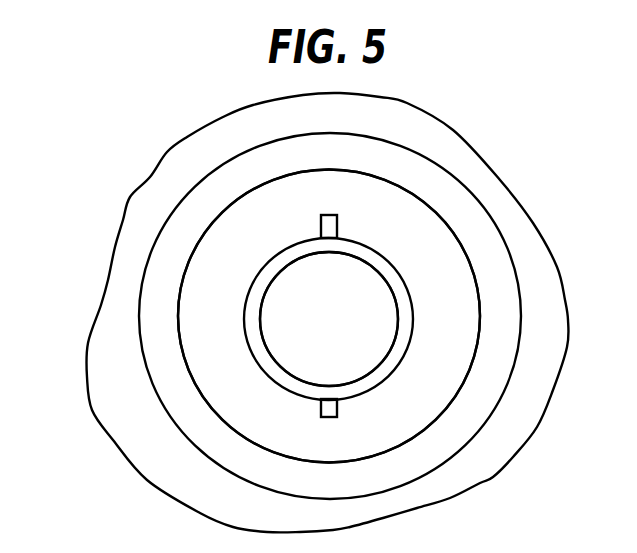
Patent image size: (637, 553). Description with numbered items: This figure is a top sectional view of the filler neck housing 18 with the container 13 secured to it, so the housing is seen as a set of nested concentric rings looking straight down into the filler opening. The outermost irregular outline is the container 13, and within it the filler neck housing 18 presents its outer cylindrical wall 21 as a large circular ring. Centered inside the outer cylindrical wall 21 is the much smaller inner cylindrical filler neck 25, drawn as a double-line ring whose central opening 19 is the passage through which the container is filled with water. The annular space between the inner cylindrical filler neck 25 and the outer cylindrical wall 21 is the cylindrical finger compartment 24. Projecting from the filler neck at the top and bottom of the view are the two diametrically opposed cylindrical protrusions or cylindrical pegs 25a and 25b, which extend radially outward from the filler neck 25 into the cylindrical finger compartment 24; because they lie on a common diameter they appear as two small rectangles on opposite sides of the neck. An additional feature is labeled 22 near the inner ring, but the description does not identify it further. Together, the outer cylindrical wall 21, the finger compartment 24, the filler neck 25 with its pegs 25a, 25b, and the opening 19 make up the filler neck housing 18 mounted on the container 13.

The container 13 is at (493, 477).
The filler neck housing 18 is at (450, 170).
The opening 19 is at (355, 344).
The outer cylindrical wall 21 is at (492, 253).
The inner wall 22 is at (338, 275).
The cylindrical finger compartment 24 is at (440, 384).
The inner cylindrical filler neck 25 is at (255, 346).
The cylindrical peg 25a is at (321, 218).
The cylindrical peg 25b is at (321, 411).